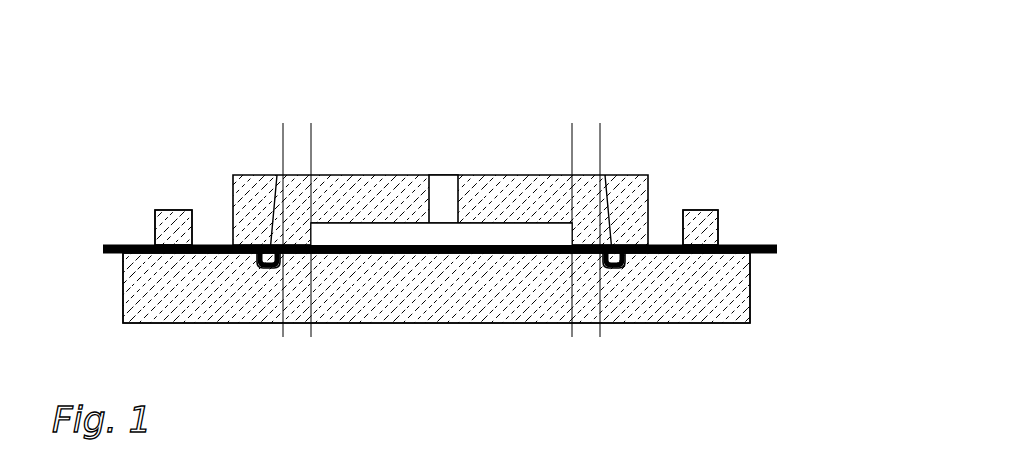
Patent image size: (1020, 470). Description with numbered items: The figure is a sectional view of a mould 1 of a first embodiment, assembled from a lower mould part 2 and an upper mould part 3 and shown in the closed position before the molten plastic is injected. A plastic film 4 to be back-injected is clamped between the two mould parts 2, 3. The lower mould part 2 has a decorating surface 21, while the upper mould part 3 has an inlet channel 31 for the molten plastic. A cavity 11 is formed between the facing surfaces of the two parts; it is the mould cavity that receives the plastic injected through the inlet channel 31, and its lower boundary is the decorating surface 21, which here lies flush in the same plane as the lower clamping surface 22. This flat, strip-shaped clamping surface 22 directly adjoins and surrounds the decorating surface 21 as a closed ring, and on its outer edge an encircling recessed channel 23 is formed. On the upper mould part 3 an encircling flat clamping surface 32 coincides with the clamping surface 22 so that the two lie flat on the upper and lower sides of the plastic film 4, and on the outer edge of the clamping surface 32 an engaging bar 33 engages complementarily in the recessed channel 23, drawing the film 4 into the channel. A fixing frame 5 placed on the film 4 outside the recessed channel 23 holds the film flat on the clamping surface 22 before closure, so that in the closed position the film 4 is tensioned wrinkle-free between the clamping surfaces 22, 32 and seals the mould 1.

The mould 1 is at (675, 108).
The lower mould part 2 is at (728, 300).
The upper mould part 3 is at (622, 197).
The plastic film 4 is at (765, 245).
The fixing frame 5 is at (175, 216).
The cavity 11 is at (375, 235).
The decorating surface 21 is at (572, 337).
The clamping surface 22 is at (311, 336).
The recessed channel 23 is at (256, 264).
The inlet channel 31 is at (445, 185).
The clamping surface 32 is at (311, 124).
The engaging bar 33 is at (277, 175).